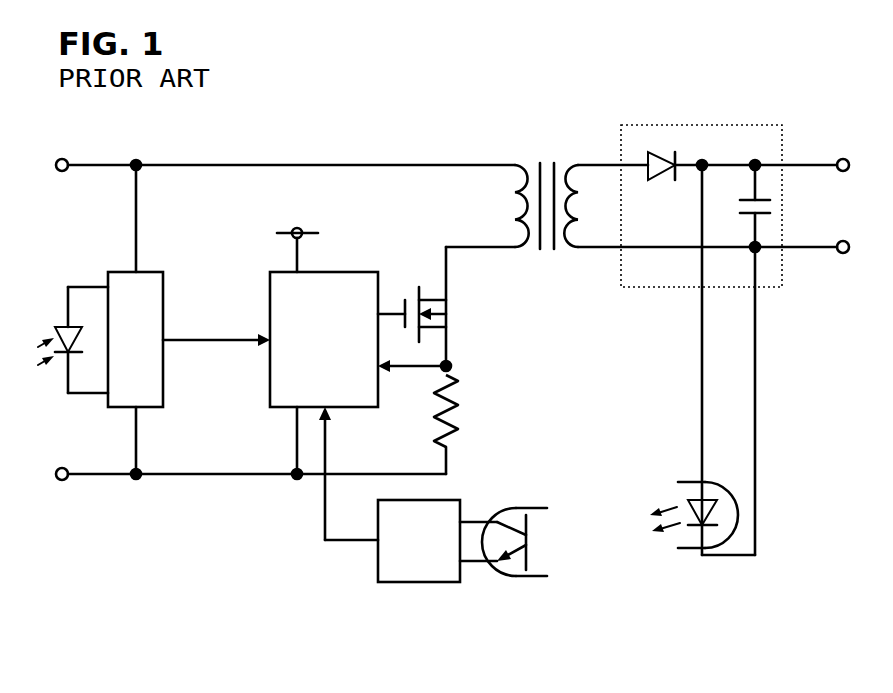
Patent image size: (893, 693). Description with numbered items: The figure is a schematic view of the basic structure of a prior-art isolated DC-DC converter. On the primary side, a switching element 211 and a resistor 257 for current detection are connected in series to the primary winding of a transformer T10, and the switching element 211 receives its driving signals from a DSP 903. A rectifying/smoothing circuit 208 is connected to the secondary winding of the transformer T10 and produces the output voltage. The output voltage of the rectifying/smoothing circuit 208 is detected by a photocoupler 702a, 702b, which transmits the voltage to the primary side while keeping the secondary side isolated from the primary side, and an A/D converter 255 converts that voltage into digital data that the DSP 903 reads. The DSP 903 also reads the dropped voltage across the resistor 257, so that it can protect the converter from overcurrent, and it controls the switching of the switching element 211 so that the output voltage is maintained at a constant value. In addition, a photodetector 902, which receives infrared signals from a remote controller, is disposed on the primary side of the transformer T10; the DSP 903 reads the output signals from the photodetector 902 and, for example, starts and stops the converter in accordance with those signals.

The photodetector 902 is at (163, 272).
The DSP 903 is at (378, 272).
The switching element 211 is at (455, 316).
The resistor for current detection 257 is at (465, 413).
The A/D converter 255 is at (414, 582).
The photocoupler 702b is at (545, 547).
The photocoupler 702a is at (673, 535).
The rectifying/smoothing circuit 208 is at (782, 122).
The transformer T10 is at (552, 146).